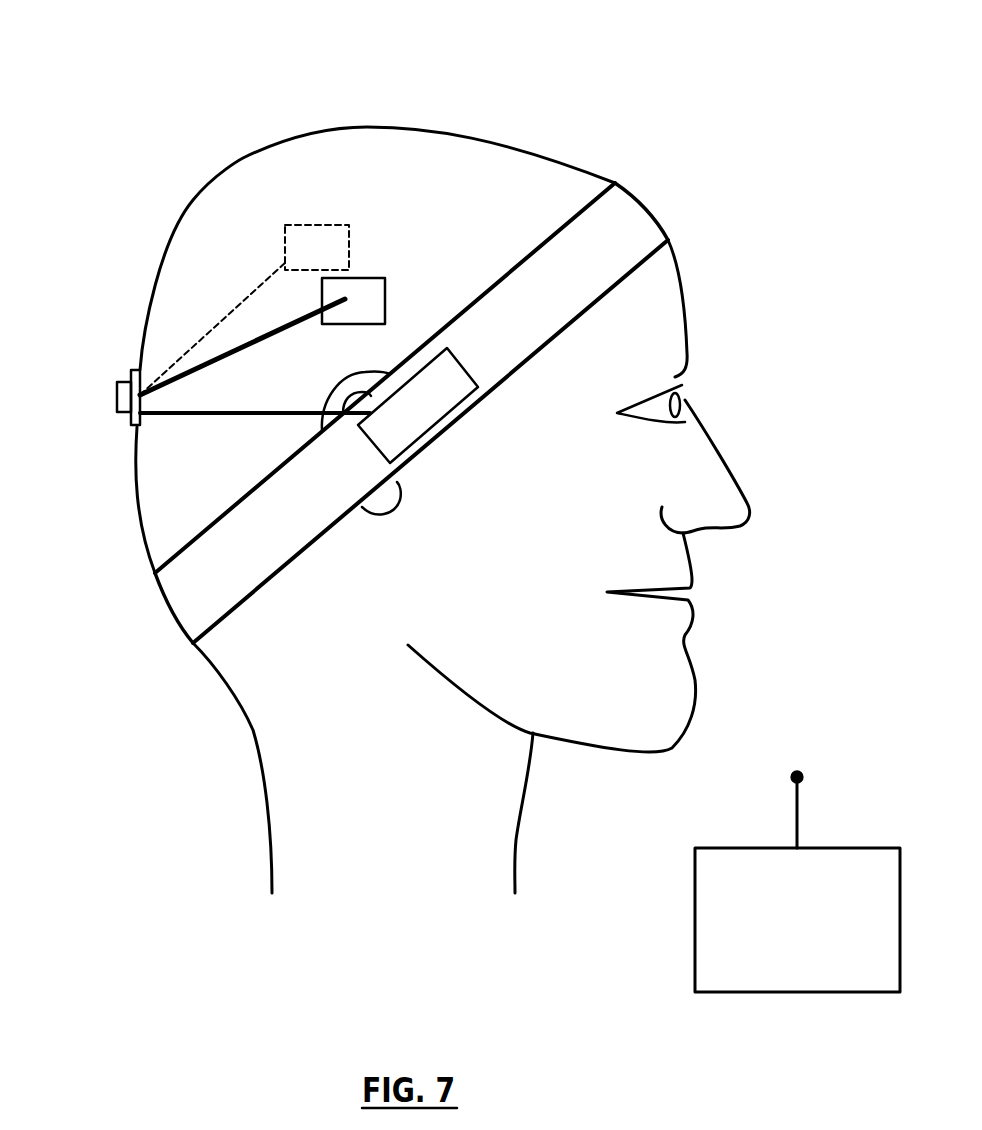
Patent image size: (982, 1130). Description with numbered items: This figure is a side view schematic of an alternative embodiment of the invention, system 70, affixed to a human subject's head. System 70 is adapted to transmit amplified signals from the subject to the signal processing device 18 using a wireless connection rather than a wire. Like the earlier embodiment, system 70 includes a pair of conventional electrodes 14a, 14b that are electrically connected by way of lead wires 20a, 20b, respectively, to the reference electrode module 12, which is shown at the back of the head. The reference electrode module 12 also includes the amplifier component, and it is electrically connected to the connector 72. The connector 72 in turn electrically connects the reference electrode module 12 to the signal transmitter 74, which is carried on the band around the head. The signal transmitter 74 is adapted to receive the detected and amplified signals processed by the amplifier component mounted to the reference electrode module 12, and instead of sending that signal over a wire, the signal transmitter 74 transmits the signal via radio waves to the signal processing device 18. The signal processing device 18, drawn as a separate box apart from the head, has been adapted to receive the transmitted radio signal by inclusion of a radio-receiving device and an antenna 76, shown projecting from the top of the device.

The system 70 is at (177, 155).
The reference electrode module 12 is at (137, 370).
The electrode 14a is at (385, 303).
The electrode 14b is at (349, 235).
The lead wire 20a is at (247, 345).
The lead wire 20b is at (232, 309).
The connector 72 is at (233, 417).
The signal transmitter 74 is at (412, 420).
The signal processing device 18 is at (695, 913).
The antenna 76 is at (795, 817).